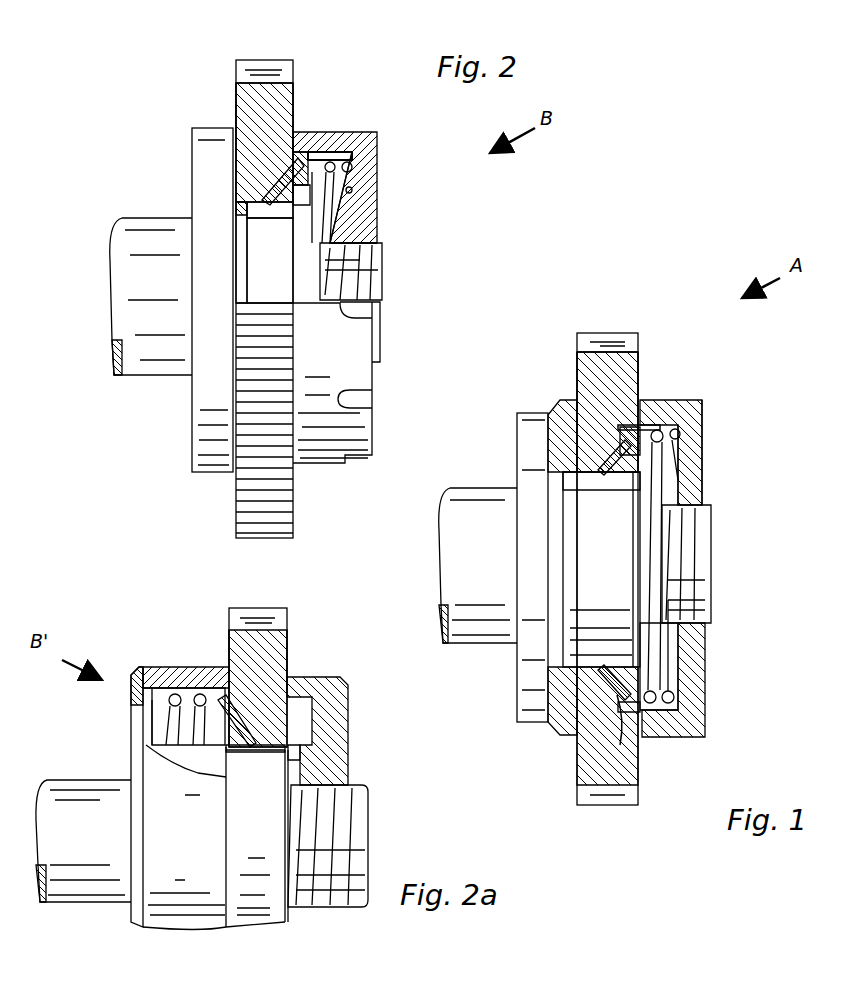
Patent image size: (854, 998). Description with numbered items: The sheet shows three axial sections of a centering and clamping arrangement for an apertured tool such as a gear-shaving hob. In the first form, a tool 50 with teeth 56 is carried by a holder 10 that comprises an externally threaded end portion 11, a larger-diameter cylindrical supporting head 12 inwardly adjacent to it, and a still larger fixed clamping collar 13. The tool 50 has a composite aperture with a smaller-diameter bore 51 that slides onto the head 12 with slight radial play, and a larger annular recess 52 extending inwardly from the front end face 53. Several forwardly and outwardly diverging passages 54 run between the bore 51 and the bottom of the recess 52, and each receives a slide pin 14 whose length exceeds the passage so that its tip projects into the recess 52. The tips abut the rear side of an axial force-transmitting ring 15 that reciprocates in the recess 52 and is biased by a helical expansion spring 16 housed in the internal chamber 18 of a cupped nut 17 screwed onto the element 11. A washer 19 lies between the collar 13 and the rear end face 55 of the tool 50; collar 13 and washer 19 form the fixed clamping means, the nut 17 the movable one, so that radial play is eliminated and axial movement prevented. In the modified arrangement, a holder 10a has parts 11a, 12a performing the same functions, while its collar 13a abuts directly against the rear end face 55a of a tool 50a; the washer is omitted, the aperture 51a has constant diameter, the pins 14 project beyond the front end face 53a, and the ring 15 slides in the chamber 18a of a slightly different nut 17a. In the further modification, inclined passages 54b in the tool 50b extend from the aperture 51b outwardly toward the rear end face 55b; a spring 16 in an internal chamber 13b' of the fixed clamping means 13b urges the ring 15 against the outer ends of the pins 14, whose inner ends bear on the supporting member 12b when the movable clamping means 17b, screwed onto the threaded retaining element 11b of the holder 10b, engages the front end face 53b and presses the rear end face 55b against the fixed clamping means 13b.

In FIG. 1, the holder 10 is at (445, 484).
In FIG. 2, the holder 10a is at (112, 372).
In FIG. 2A, the holder 10b is at (55, 776).
In FIG. 1, the externally threaded end portion 11 is at (695, 560).
In FIG. 2, the externally threaded end portion 11a is at (370, 270).
In FIG. 2A, the externally threaded retaining element 11b is at (358, 818).
In FIG. 1, the supporting head 12 is at (605, 597).
In FIG. 2, the supporting head 12a is at (250, 262).
In FIG. 2A, the supporting member 12b is at (268, 840).
In FIG. 1, the collar 13 is at (515, 448).
In FIG. 2, the fixed clamping collar 13a is at (200, 182).
In FIG. 2A, the fixed clamping means 13b is at (119, 797).
In FIG. 2A, the internal chamber 13b' is at (186, 661).
In FIG. 2, the slide pin 14 is at (290, 158).
In FIG. 1, the slide pin 14 is at (612, 455).
In FIG. 2A, the slide pin 14 is at (237, 736).
In FIG. 2, the axial force-transmitting ring 15 is at (332, 160).
In FIG. 1, the axial force-transmitting ring 15 is at (660, 428).
In FIG. 2A, the axial force-transmitting ring 15 is at (218, 690).
In FIG. 2, the helical expansion spring 16 is at (377, 150).
In FIG. 1, the helical expansion spring 16 is at (690, 428).
In FIG. 2A, the helical expansion spring 16 is at (152, 670).
In FIG. 1, the cupped nut 17 is at (688, 480).
In FIG. 2, the nut 17a is at (378, 190).
In FIG. 2A, the movable clamping means 17b is at (338, 770).
In FIG. 1, the internal chamber 18 is at (675, 702).
In FIG. 2, the chamber 18a is at (352, 193).
In FIG. 1, the washer 19 is at (552, 415).
In FIG. 1, the tool 50 is at (630, 332).
In FIG. 2, the tool 50a is at (290, 60).
In FIG. 2A, the tool 50b is at (290, 607).
In FIG. 1, the bore 51 is at (583, 486).
In FIG. 2, the aperture 51a is at (236, 208).
In FIG. 2A, the aperture 51b is at (300, 750).
In FIG. 1, the recess 52 is at (648, 712).
In FIG. 1, the front end face 53 is at (638, 385).
In FIG. 2, the front end face 53a is at (296, 100).
In FIG. 2A, the front end face 53b is at (290, 660).
In FIG. 2, the passage 54 is at (278, 216).
In FIG. 1, the passage 54 is at (625, 740).
In FIG. 2A, the inclined passage 54b is at (262, 752).
In FIG. 1, the rear end face 55 is at (577, 380).
In FIG. 2, the rear end face 55a is at (236, 110).
In FIG. 2A, the rear end face 55b is at (229, 640).
In FIG. 1, the teeth 56 is at (582, 340).